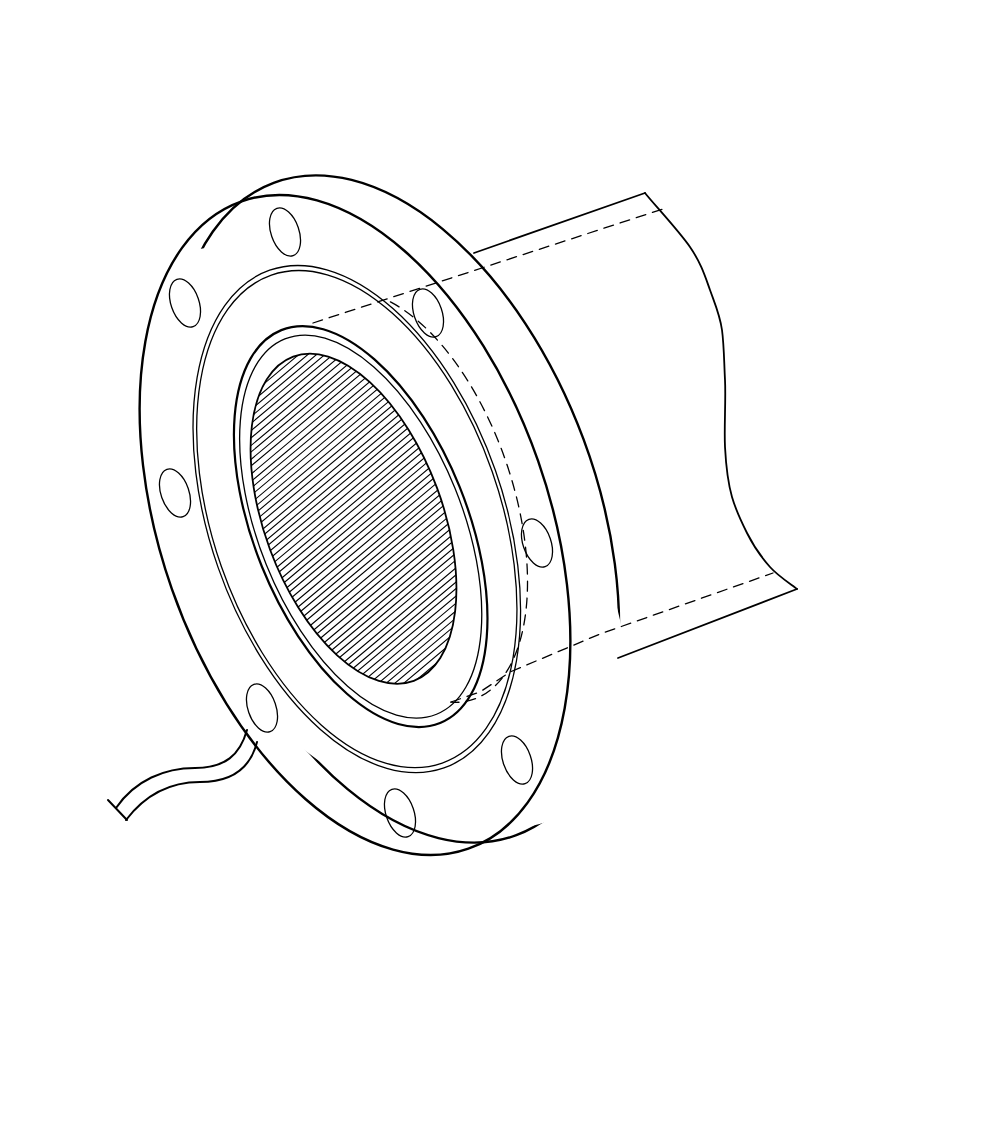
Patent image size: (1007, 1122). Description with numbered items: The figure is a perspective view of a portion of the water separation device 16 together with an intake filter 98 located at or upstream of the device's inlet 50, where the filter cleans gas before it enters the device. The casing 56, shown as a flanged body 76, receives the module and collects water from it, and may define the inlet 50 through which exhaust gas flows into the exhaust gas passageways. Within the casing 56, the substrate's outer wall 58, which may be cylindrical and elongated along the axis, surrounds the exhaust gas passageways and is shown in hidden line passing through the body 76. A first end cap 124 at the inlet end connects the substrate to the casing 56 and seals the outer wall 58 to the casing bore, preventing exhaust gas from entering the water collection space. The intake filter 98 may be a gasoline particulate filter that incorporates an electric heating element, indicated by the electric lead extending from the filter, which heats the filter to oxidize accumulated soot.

The water separation device 16 is at (551, 88).
The inlet 50 is at (261, 851).
The casing 56 is at (593, 207).
The outer wall 58 is at (523, 283).
The body 76 is at (688, 335).
The intake filter 98 is at (368, 688).
The first end cap 124 is at (250, 407).